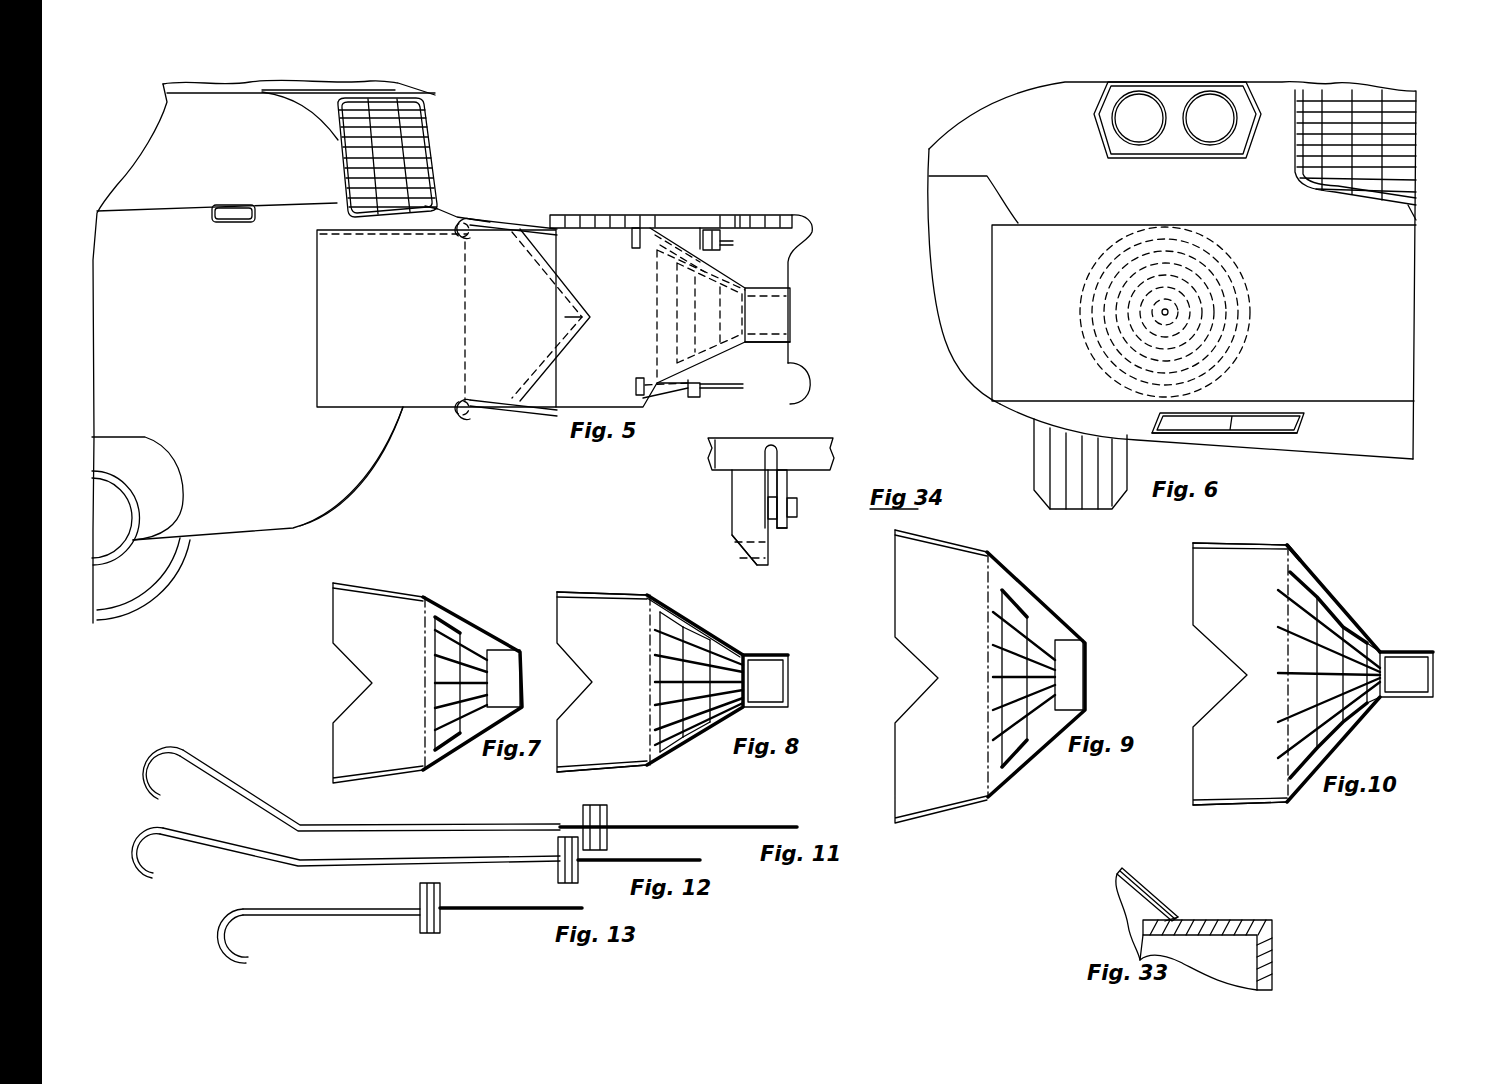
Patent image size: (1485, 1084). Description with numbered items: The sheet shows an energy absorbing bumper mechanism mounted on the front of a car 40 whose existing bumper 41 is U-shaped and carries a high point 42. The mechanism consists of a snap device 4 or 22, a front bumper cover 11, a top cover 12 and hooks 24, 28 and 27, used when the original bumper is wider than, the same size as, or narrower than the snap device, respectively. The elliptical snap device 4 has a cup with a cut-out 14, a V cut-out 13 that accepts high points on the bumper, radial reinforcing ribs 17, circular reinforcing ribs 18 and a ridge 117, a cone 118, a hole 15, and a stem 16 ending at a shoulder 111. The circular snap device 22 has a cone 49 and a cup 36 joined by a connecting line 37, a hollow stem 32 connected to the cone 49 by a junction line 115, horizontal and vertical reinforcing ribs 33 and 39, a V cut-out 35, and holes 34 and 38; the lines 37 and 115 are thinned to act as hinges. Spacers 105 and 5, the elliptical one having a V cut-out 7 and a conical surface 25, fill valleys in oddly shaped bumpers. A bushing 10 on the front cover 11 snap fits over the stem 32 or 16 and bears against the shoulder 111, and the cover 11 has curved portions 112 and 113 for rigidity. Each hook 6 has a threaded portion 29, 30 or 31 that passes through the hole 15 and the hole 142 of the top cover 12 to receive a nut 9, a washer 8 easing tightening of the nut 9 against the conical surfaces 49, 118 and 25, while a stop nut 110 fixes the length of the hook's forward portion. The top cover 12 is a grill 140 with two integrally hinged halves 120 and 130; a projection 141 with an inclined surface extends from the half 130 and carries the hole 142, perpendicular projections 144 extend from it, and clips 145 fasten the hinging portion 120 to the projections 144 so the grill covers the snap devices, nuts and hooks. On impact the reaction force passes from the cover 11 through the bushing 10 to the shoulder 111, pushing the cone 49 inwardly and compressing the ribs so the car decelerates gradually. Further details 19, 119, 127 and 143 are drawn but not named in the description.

In FIG. 8, the snap device 4 is at (641, 580).
In FIG. 33, the snap device 4 is at (1280, 942).
In FIG. 9, the spacer 5 is at (1032, 782).
In FIG. 6, the hook 6 is at (1224, 460).
In FIG. 12, the hook 6 is at (532, 873).
In FIG. 7, the V cut-out 7 is at (353, 668).
In FIG. 5, the washer 8 is at (677, 398).
In FIG. 5, the nut 9 is at (707, 392).
In FIG. 5, the bushing 10 is at (760, 343).
In FIG. 5, the front bumper cover 11 is at (792, 310).
In FIG. 5, the top cover 12 is at (673, 217).
In FIG. 8, the V cut-out 13 is at (587, 692).
In FIG. 8, the cut-out 14 is at (587, 592).
In FIG. 8, the hole 15 is at (663, 605).
In FIG. 8, the stem 16 is at (763, 655).
In FIG. 8, the radial reinforcing ribs 17 is at (650, 663).
In FIG. 6, the circular reinforcing ribs 18 is at (1235, 328).
In FIG. 8, the circular reinforcing ribs 18 is at (663, 725).
In FIG. 7, the nozzle block 19 is at (470, 637).
In FIG. 10, the snap device 22 is at (1305, 811).
In FIG. 11, the hook 24 is at (337, 826).
In FIG. 7, the conical surface 25 is at (455, 752).
In FIG. 13, the hook 27 is at (322, 916).
In FIG. 5, the hook 28 is at (485, 418).
In FIG. 12, the hook 28 is at (203, 843).
In FIG. 11, the threaded portion 29 is at (775, 822).
In FIG. 12, the threaded portion 30 is at (700, 863).
In FIG. 13, the threaded portion 31 is at (530, 914).
In FIG. 10, the hollow stem 32 is at (1407, 697).
In FIG. 10, the horizontal reinforcing ribs 33 is at (1278, 720).
In FIG. 10, the hole 34 is at (1302, 560).
In FIG. 5, the V cut-out 35 is at (583, 308).
In FIG. 10, the V cut-out 35 is at (1208, 712).
In FIG. 10, the cup 36 is at (1228, 542).
In FIG. 10, the connecting line 37 is at (1290, 547).
In FIG. 10, the hole 38 is at (1303, 788).
In FIG. 10, the vertical reinforcing ribs 39 is at (1308, 590).
In FIG. 5, the car 40 is at (393, 430).
In FIG. 5, the existing bumper 41 is at (436, 318).
In FIG. 5, the high point 42 is at (560, 324).
In FIG. 10, the cone 49 is at (1363, 623).
In FIG. 7, the spacer 105 is at (395, 577).
In FIG. 13, the stop nut 110 is at (440, 930).
In FIG. 8, the shoulder 111 is at (747, 650).
In FIG. 33, the shoulder 111 is at (1177, 918).
In FIG. 5, the curved portion 112 is at (818, 387).
In FIG. 5, the curved portion 113 is at (810, 238).
In FIG. 10, the junction line 115 is at (1392, 648).
In FIG. 8, the ridge 117 is at (687, 627).
In FIG. 8, the cone 118 is at (680, 743).
In FIG. 8, the bottom wall 119 is at (627, 772).
In FIG. 5, the hinged half 120 is at (751, 213).
In FIG. 34, the hinged half 120 is at (813, 437).
In FIG. 33, the wedge 127 is at (1123, 907).
In FIG. 5, the hinged half 130 is at (612, 215).
In FIG. 34, the hinged half 130 is at (735, 437).
In FIG. 5, the grill 140 is at (705, 217).
In FIG. 34, the grill 140 is at (774, 428).
In FIG. 34, the projection 141 is at (732, 515).
In FIG. 34, the hole 142 is at (747, 552).
In FIG. 34, the plate end 143 is at (790, 527).
In FIG. 5, the projections 144 is at (723, 238).
In FIG. 34, the projections 144 is at (797, 510).
In FIG. 34, the clips 145 is at (790, 483).